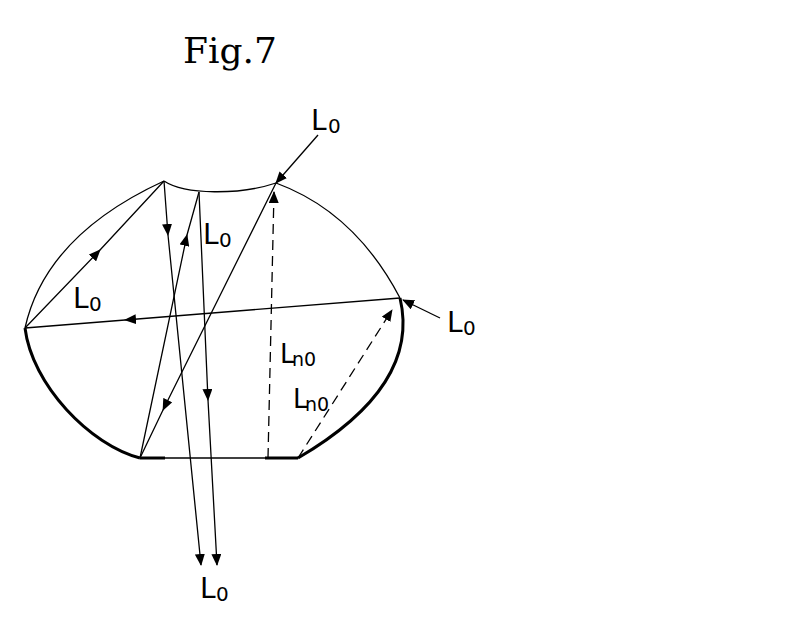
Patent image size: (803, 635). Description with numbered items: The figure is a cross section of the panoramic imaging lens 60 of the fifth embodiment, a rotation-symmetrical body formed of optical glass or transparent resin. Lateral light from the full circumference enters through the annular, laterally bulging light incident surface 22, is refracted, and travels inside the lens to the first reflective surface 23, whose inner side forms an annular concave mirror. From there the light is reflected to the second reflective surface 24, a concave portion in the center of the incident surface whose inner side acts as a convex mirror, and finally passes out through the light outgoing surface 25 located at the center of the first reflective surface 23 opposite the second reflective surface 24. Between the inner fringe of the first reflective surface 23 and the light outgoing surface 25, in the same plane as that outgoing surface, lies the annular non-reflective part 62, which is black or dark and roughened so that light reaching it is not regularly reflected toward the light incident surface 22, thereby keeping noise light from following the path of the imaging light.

The panoramic imaging lens 60 is at (248, 334).
The light incident surface 22 is at (378, 253).
The first reflective surface 23 is at (366, 405).
The second reflective surface 24 is at (247, 184).
The light outgoing surface 25 is at (240, 462).
The non-reflective part 62 is at (283, 461).